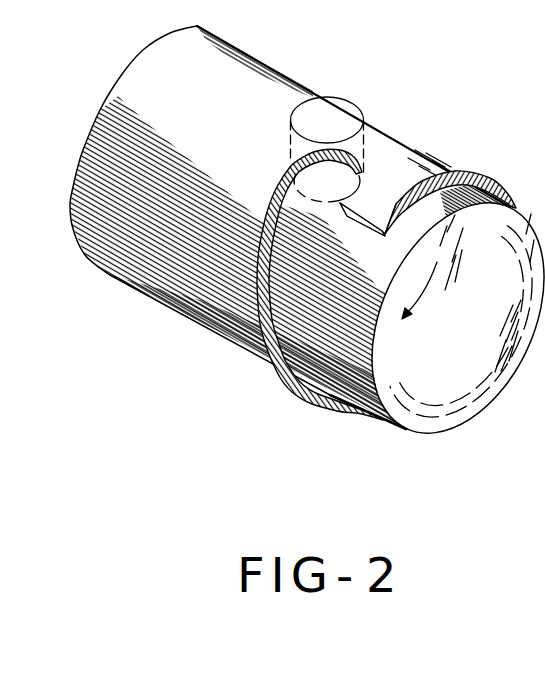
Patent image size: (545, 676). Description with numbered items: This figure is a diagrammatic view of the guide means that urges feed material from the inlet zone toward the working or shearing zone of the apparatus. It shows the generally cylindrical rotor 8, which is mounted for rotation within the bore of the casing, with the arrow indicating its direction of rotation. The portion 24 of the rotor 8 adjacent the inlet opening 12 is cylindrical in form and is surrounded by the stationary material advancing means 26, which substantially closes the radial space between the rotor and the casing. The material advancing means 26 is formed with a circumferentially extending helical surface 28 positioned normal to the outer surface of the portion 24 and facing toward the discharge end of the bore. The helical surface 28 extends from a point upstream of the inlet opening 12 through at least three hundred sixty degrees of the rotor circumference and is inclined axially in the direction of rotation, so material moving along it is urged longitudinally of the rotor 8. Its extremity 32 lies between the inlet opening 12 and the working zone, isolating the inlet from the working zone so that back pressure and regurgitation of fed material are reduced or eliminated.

The rotor 8 is at (453, 393).
The inlet opening 12 is at (312, 177).
The portion of the rotor 24 is at (331, 375).
The material advancing means 26 is at (163, 293).
The helical surface 28 is at (341, 394).
The extremity of the helical surface 32 is at (377, 194).